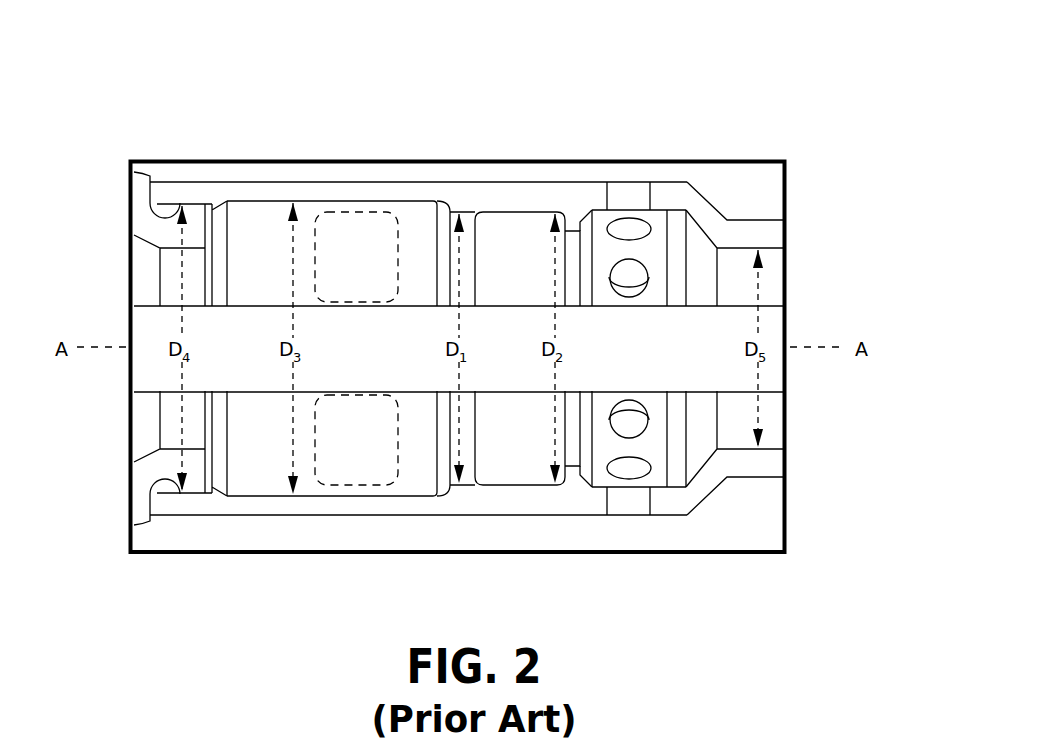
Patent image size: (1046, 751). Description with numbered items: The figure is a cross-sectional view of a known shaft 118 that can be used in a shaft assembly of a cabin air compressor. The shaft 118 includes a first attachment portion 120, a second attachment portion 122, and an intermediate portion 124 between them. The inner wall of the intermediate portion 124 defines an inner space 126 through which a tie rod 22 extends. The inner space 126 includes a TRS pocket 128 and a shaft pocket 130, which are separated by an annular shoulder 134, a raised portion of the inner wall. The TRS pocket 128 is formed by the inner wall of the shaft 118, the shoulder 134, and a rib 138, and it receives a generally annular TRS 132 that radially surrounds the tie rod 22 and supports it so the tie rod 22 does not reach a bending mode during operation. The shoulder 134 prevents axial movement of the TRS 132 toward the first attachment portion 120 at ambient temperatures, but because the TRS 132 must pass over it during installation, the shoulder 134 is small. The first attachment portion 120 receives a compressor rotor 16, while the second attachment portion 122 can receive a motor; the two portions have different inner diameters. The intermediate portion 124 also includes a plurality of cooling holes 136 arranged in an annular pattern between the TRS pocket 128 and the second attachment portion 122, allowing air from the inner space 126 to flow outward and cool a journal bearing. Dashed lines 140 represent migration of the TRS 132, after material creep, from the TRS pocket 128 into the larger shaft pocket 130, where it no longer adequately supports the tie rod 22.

The shaft 118 is at (640, 77).
The compressor rotor 16 is at (138, 507).
The first attachment portion 120 is at (177, 193).
The shaft pocket 130 is at (268, 454).
The intermediate portion 124 is at (373, 193).
The inner space 126 is at (403, 484).
The dashed lines 140 is at (352, 486).
The annular shoulder 134 is at (470, 210).
The TRS 132 is at (537, 275).
The TRS pocket 128 is at (491, 210).
The rib 138 is at (574, 216).
The cooling holes 136 is at (628, 517).
The tie rod 22 is at (693, 393).
The second attachment portion 122 is at (772, 235).